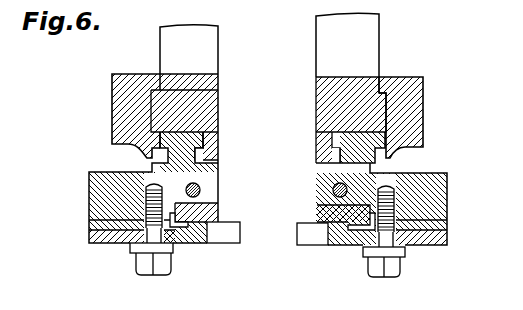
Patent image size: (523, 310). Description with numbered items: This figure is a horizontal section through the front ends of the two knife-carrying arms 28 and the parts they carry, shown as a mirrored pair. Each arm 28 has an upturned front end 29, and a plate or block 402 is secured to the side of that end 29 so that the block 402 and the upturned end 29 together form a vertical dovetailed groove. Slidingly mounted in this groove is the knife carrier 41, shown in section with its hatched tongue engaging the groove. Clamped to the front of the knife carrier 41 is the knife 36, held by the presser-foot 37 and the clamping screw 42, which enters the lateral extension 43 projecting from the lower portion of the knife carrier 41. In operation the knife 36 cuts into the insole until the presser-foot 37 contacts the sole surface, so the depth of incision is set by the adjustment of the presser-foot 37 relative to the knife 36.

The knife-carrying arm 28 is at (322, 38).
The upturned front end 29 is at (318, 116).
The knife 36 is at (197, 224).
The presser-foot 37 is at (303, 236).
The knife carrier 41 is at (323, 185).
The clamping screw 42 is at (146, 273).
The lateral extension 43 is at (103, 197).
The plate or block 402 is at (123, 119).